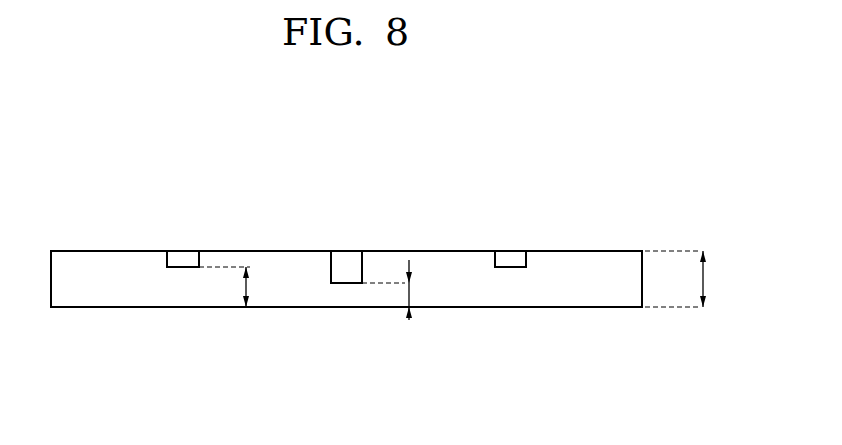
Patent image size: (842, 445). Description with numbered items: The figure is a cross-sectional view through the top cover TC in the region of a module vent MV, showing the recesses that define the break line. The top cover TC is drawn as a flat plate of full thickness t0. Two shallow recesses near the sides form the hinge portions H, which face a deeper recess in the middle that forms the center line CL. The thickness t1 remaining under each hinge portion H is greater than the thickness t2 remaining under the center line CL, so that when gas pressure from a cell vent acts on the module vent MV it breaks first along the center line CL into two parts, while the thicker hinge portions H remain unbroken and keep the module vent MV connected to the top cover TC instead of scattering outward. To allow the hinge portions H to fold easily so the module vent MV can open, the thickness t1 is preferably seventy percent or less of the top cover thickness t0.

The hinge portion H is at (183, 257).
The center line CL is at (347, 258).
The module vent MV is at (617, 225).
The top cover TC is at (609, 285).
The thickness of the top cover t0 is at (690, 279).
The thickness of the hinge portions t1 is at (239, 287).
The thickness of the center line t2 is at (402, 290).